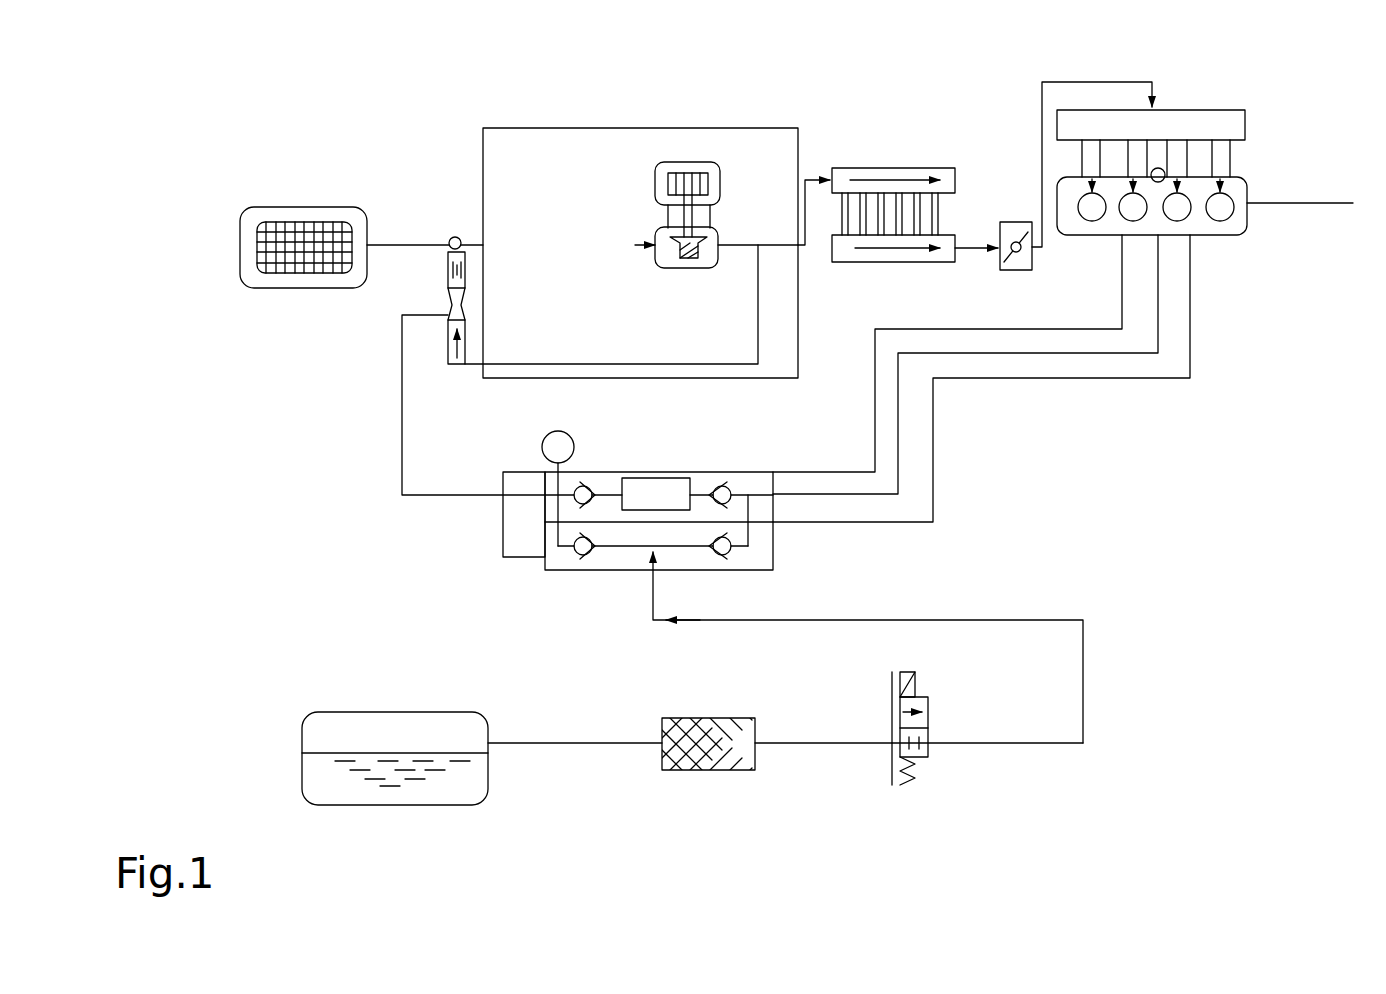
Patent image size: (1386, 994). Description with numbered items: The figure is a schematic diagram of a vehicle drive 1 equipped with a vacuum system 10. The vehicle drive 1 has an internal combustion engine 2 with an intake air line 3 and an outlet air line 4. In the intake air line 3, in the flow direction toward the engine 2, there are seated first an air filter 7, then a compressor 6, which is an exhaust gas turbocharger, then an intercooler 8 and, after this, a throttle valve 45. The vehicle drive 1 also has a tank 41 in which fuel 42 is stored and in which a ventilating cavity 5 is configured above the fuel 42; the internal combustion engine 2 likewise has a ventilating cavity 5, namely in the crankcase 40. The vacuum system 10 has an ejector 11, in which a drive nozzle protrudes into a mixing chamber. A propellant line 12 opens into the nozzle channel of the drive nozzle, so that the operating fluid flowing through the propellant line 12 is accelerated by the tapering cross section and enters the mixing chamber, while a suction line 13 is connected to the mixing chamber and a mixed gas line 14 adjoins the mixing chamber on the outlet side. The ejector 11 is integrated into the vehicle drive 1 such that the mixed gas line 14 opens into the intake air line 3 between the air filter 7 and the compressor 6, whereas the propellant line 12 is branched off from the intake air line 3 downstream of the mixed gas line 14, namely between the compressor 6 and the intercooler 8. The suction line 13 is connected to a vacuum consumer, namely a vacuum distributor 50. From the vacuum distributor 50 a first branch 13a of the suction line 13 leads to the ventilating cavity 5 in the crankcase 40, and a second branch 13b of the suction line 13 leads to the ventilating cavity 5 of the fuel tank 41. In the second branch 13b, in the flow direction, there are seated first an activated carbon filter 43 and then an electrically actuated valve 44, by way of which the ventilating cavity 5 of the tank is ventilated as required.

The vehicle drive 1 is at (227, 163).
The internal combustion engine 2 is at (1251, 176).
The intake air line 3 is at (419, 243).
The outlet air line 4 is at (1312, 207).
The ventilating cavity 5 is at (1178, 150).
The compressor 6 is at (666, 162).
The air filter 7 is at (303, 206).
The intercooler 8 is at (916, 166).
The vacuum system 10 is at (543, 572).
The ejector 11 is at (469, 303).
The propellant line 12 is at (642, 363).
The suction line 13 is at (399, 428).
The first branch 13a is at (1045, 353).
The second branch 13b is at (1085, 678).
The mixed gas line 14 is at (469, 254).
The crankcase 40 is at (1112, 215).
The tank 41 is at (305, 756).
The fuel 42 is at (345, 763).
The activated carbon filter 43 is at (706, 772).
The electrically actuated valve 44 is at (912, 785).
The throttle valve 45 is at (1012, 221).
The vacuum distributor 50 is at (656, 461).